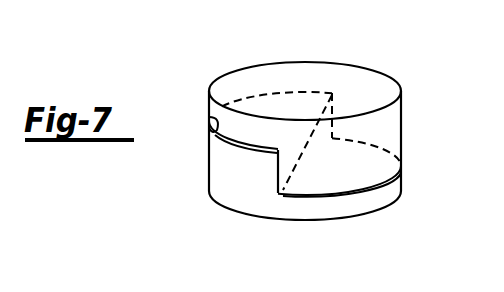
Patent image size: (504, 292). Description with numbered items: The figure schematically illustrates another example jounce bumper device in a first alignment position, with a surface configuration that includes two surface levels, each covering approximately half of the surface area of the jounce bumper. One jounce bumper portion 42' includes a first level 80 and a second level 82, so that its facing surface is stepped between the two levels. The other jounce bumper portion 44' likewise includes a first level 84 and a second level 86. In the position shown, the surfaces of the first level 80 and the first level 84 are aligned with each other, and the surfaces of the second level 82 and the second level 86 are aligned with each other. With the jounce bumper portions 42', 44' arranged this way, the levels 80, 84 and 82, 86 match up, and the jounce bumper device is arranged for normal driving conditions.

The jounce bumper portion 42' is at (305, 101).
The jounce bumper portion 44' is at (273, 226).
The first level 80 is at (240, 148).
The second level 82 is at (372, 178).
The first level 84 is at (210, 116).
The second level 86 is at (308, 193).